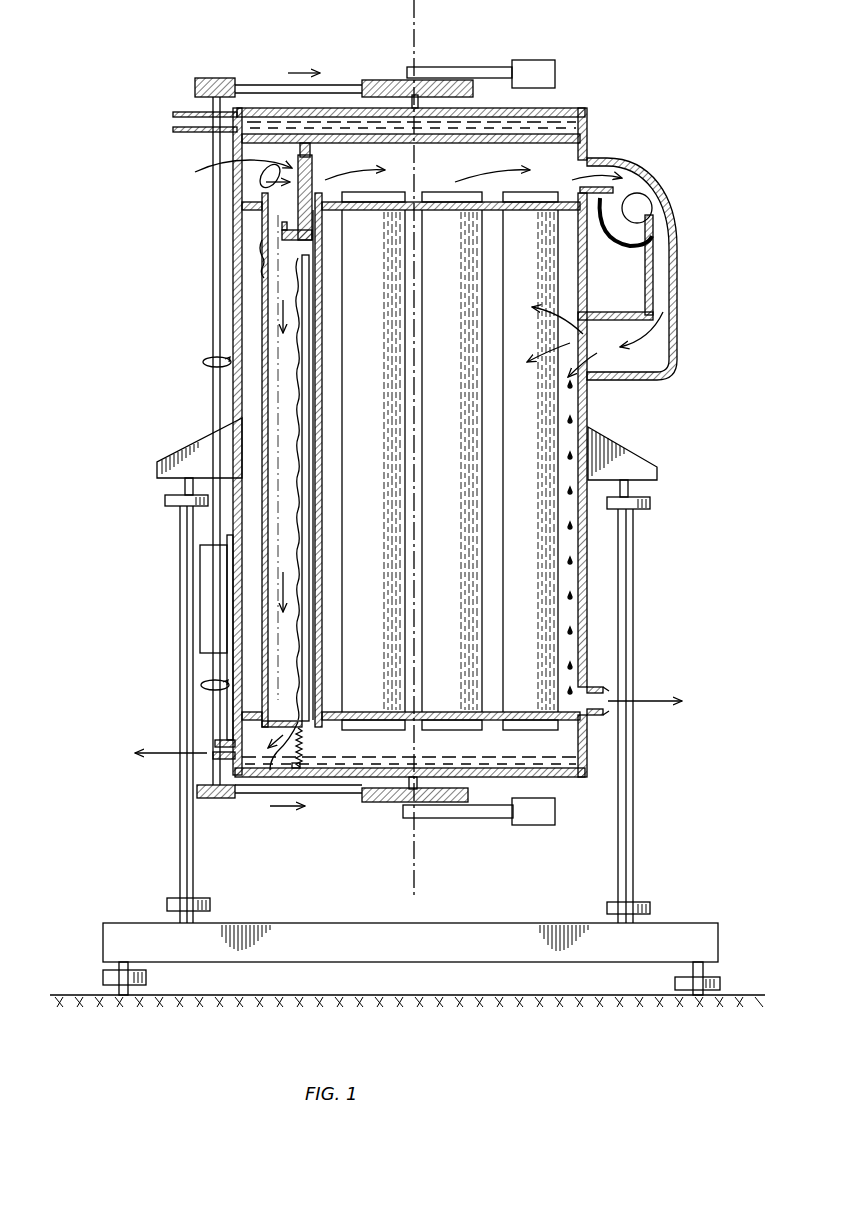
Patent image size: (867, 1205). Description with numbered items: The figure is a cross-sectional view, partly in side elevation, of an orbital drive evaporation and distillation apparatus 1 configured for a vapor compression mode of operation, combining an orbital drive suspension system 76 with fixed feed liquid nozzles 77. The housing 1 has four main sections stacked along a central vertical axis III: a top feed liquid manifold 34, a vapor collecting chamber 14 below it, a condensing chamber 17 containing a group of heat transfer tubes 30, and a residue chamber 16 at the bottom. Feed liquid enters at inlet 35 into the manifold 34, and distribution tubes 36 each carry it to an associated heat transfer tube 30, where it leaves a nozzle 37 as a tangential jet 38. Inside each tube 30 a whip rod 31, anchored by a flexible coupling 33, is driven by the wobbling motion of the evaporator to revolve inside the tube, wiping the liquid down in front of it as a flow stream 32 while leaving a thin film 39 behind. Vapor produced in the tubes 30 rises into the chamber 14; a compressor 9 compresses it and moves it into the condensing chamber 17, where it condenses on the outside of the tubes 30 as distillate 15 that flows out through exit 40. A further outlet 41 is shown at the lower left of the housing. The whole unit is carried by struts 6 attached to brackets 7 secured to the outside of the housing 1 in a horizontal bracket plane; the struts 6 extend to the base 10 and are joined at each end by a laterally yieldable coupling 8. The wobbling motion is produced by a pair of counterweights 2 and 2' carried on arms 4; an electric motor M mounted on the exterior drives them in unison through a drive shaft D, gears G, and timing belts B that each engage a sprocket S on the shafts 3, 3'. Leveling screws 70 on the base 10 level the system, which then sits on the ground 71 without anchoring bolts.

The evaporation and distillation apparatus 1 is at (587, 402).
The counterweight 2 is at (533, 62).
The counterweight 2' is at (533, 825).
The shaft 3 is at (398, 82).
The shaft 3' is at (389, 801).
The counter weight arm 4 is at (494, 68).
The struts 6 is at (180, 622).
The brackets 7 is at (196, 436).
The laterally yieldable coupling 8 is at (165, 500).
The compressor 9 is at (664, 178).
The base 10 is at (466, 953).
The vapor collecting chamber 14 is at (448, 170).
The distillate 15 is at (578, 646).
The residue chamber 16 is at (460, 751).
The condensing chamber 17 is at (580, 568).
The heat transfer tubes 30 is at (262, 308).
The whip rod 31 is at (309, 348).
The flow stream 32 is at (298, 372).
The flexible coupling 33 is at (302, 746).
The feed liquid manifold 34 is at (263, 120).
The inlet 35 is at (162, 122).
The distribution tubes 36 is at (311, 150).
The nozzle 37 is at (296, 234).
The tangential jet 38 is at (258, 252).
The thin film 39 is at (314, 392).
The exit 40 is at (645, 698).
The drain outlet 41 is at (170, 748).
The leveling screws 70 is at (103, 977).
The ground 71 is at (545, 995).
The orbital drive suspension system 76 is at (156, 637).
The fixed feed liquid nozzles 77 is at (231, 175).
The central vertical axis III is at (414, 16).
The timing belts B is at (342, 86).
The drive shaft D is at (213, 288).
The gears G is at (213, 78).
The electric motor M is at (218, 605).
The sprocket S is at (434, 80).